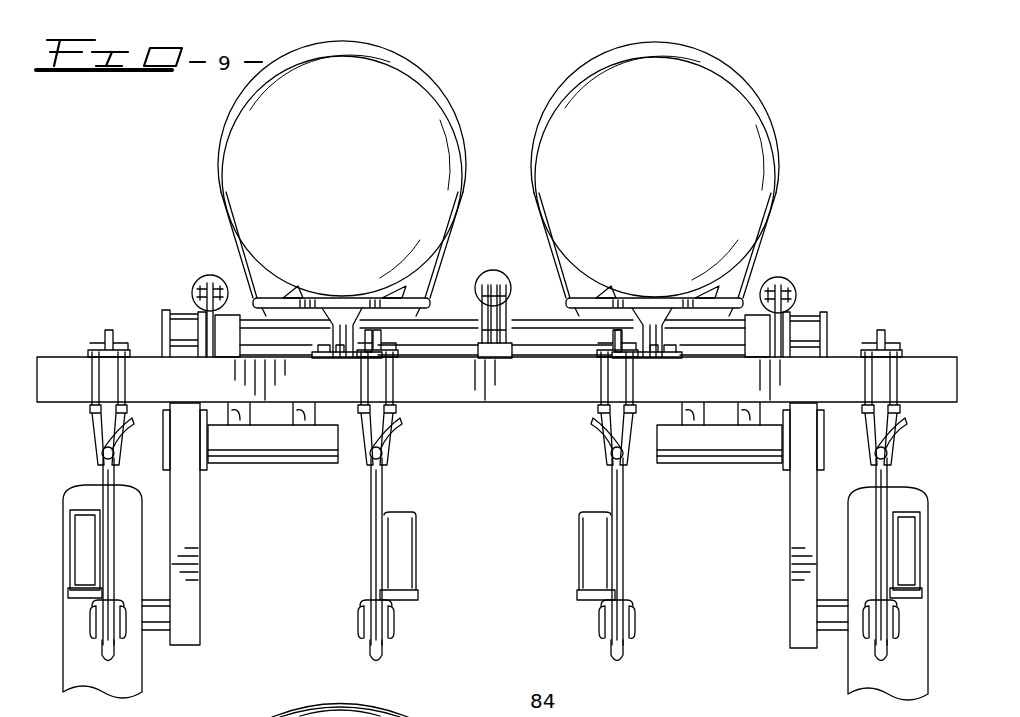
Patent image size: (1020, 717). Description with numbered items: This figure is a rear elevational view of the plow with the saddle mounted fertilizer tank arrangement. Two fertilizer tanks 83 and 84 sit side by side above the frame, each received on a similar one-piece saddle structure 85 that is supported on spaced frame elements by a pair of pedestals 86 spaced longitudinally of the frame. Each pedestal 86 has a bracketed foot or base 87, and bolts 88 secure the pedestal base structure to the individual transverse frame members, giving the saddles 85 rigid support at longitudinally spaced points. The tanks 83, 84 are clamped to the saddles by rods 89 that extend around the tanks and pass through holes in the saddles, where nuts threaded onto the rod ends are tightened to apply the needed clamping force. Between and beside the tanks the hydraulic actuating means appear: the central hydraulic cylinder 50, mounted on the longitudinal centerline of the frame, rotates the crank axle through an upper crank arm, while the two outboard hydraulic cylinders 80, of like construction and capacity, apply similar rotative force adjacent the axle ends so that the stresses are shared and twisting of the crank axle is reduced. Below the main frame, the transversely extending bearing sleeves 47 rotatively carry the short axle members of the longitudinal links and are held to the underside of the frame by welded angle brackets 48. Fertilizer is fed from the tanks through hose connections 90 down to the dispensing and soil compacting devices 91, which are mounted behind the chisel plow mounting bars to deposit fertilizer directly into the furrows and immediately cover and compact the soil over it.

The bearing sleeve 47 is at (312, 464).
The angle bracket 48 is at (246, 416).
The hydraulic cylinder 50 is at (495, 272).
The hydraulic cylinder 80 is at (218, 276).
The fertilizer tank 83 is at (608, 92).
The fertilizer tank 84 is at (430, 115).
The saddle structure 85 is at (332, 306).
The pedestal 86 is at (343, 332).
The bracketed foot or base 87 is at (330, 355).
The bolt 88 is at (316, 344).
The rod 89 is at (224, 158).
The hose connection 90 is at (122, 424).
The dispensing and soil compacting device 91 is at (88, 624).